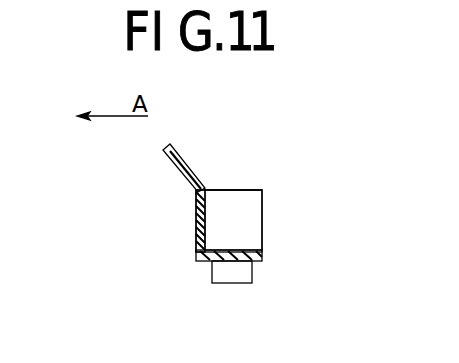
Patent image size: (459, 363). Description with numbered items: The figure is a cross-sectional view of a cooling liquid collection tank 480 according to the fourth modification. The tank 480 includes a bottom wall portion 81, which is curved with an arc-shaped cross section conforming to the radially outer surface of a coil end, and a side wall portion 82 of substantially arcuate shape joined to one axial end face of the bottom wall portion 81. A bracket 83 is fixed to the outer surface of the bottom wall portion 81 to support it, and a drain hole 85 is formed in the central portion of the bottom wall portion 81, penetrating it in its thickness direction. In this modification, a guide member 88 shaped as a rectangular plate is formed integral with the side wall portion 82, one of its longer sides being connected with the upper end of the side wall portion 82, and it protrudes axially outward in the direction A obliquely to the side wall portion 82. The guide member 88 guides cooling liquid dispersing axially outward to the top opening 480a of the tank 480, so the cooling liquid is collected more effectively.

The cooling liquid collection tank 480 is at (265, 163).
The top opening 480a is at (232, 190).
The bottom wall portion 81 is at (232, 258).
The side wall portion 82 is at (196, 228).
The bracket 83 is at (232, 282).
The drain hole 85 is at (253, 278).
The guide member 88 is at (178, 174).